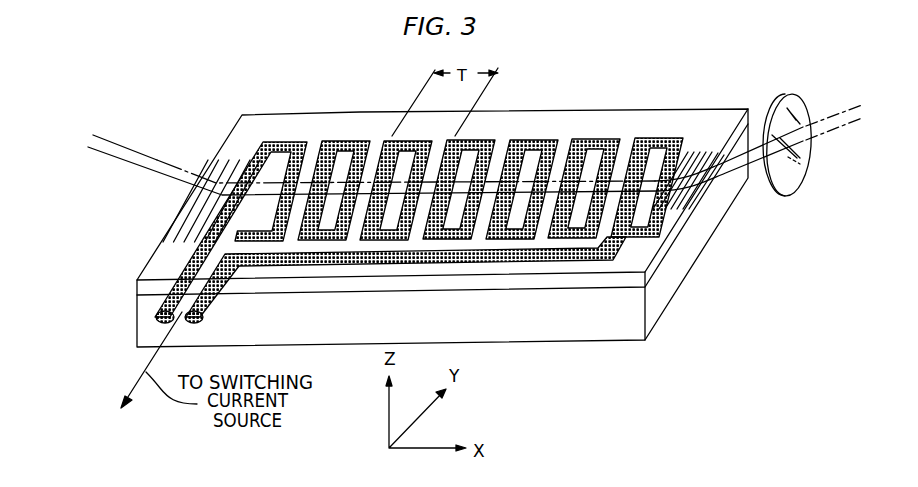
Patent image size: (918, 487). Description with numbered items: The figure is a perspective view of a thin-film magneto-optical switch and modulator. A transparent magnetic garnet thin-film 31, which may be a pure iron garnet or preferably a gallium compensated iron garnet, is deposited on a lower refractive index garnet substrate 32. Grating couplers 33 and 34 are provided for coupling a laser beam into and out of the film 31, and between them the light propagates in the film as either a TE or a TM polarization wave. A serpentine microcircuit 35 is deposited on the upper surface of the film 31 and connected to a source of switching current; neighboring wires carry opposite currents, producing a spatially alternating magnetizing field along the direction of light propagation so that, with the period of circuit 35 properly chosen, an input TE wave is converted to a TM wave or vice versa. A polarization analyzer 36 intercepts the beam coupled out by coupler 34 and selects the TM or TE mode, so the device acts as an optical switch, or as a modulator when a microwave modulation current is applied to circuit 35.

The transparent magnetic garnet thin-film 31 is at (137, 291).
The garnet substrate 32 is at (573, 320).
The grating coupler 33 is at (213, 172).
The grating coupler 34 is at (692, 162).
The serpentine microcircuit 35 is at (603, 139).
The polarization analyzer 36 is at (792, 182).